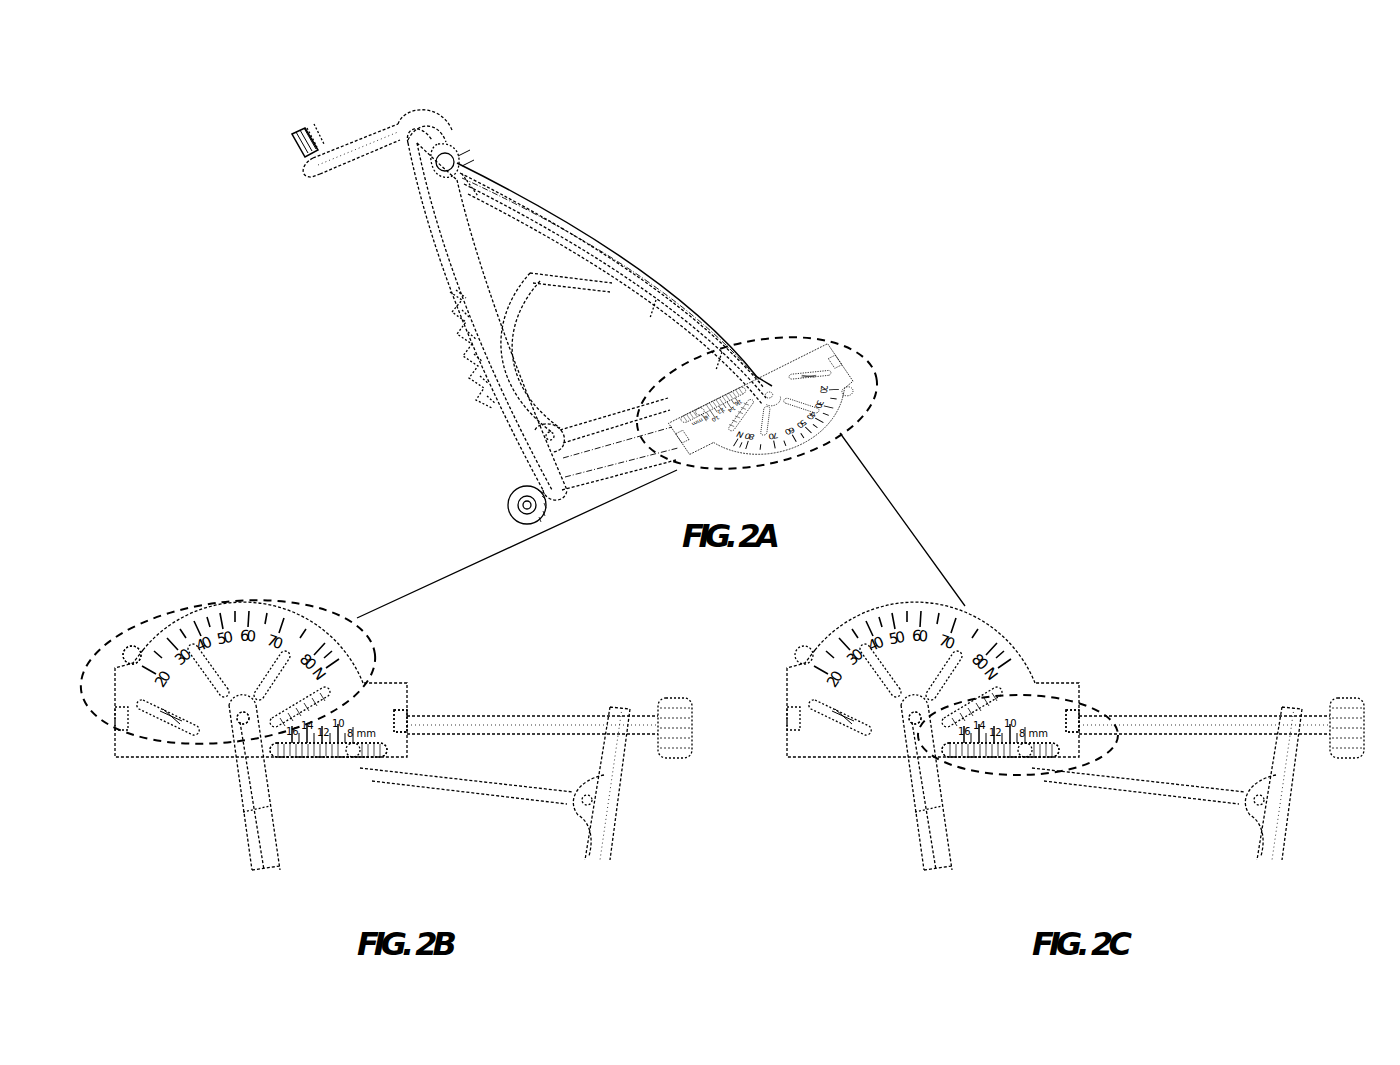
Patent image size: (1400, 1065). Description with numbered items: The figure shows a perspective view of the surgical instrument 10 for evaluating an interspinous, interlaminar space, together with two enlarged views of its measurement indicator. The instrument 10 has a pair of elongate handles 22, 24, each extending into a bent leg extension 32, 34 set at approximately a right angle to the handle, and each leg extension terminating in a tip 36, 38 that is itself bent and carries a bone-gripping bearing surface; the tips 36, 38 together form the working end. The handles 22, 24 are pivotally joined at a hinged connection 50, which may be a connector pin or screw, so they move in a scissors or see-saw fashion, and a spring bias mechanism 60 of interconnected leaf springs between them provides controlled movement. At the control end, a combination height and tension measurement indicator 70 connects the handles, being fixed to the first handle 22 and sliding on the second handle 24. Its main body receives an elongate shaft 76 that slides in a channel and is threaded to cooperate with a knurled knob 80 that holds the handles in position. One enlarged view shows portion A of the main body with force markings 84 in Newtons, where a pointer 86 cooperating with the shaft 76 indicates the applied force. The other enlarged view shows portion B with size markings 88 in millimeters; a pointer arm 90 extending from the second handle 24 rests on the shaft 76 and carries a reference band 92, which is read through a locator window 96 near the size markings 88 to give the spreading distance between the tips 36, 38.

In FIG. 2A, the surgical instrument 10 is at (580, 115).
In FIG. 2A, the first handle 22 is at (520, 189).
In FIG. 2B, the first handle 22 is at (257, 813).
In FIG. 2C, the first handle 22 is at (896, 787).
In FIG. 2A, the second handle 24 is at (450, 216).
In FIG. 2B, the second handle 24 is at (608, 811).
In FIG. 2C, the second handle 24 is at (1315, 794).
In FIG. 2A, the leg extension 32 is at (413, 118).
In FIG. 2A, the leg extension 34 is at (366, 160).
In FIG. 2A, the tip 36 is at (312, 125).
In FIG. 2A, the tip 38 is at (293, 138).
In FIG. 2A, the hinged connection 50 is at (452, 154).
In FIG. 2A, the spring bias mechanism 60 is at (578, 285).
In FIG. 2A, the combination height and tension measurement indicator 70 is at (801, 333).
In FIG. 2A, the elongate shaft 76 is at (615, 420).
In FIG. 2B, the elongate shaft 76 is at (500, 722).
In FIG. 2C, the elongate shaft 76 is at (1221, 693).
In FIG. 2A, the knurled nut or knob 80 is at (510, 490).
In FIG. 2B, the force markings 84 is at (185, 618).
In FIG. 2B, the pointer 86 is at (125, 651).
In FIG. 2B, the size markings 88 is at (351, 712).
In FIG. 2C, the size markings 88 is at (1046, 662).
In FIG. 2A, the pointer arm 90 is at (620, 458).
In FIG. 2B, the pointer arm 90 is at (482, 812).
In FIG. 2C, the pointer arm 90 is at (1154, 820).
In FIG. 2B, the reference band 92 is at (353, 757).
In FIG. 2C, the reference band 92 is at (1034, 659).
In FIG. 2B, the locator window 96 is at (313, 760).
In FIG. 2C, the locator window 96 is at (1012, 786).
In FIG. 2A, the portion A is at (862, 370).
In FIG. 2B, the portion A is at (232, 603).
In FIG. 2A, the portion B is at (680, 388).
In FIG. 2C, the portion B is at (1032, 696).